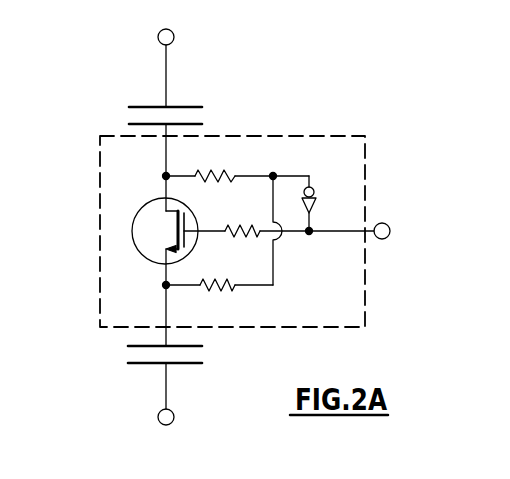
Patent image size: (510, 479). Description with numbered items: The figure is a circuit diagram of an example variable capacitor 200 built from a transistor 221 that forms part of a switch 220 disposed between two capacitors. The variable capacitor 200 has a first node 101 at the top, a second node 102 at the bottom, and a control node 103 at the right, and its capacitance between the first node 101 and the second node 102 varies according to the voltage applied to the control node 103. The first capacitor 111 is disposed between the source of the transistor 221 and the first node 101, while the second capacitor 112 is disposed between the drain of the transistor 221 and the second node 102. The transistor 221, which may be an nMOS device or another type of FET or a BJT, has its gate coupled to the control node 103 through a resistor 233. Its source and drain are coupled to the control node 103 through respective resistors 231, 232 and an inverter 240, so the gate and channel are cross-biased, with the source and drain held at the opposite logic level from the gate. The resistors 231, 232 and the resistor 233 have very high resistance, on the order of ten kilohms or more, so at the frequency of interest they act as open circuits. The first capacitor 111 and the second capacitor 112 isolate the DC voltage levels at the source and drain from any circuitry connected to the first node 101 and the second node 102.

The first node 101 is at (158, 37).
The second node 102 is at (158, 421).
The control node 103 is at (388, 226).
The first capacitor 111 is at (150, 107).
The second capacitor 112 is at (142, 364).
The variable capacitor 200 is at (243, 92).
The switch 220 is at (100, 244).
The transistor 221 is at (155, 265).
The resistor 231 is at (215, 171).
The resistor 232 is at (220, 292).
The resistor 233 is at (259, 236).
The inverter 240 is at (318, 204).